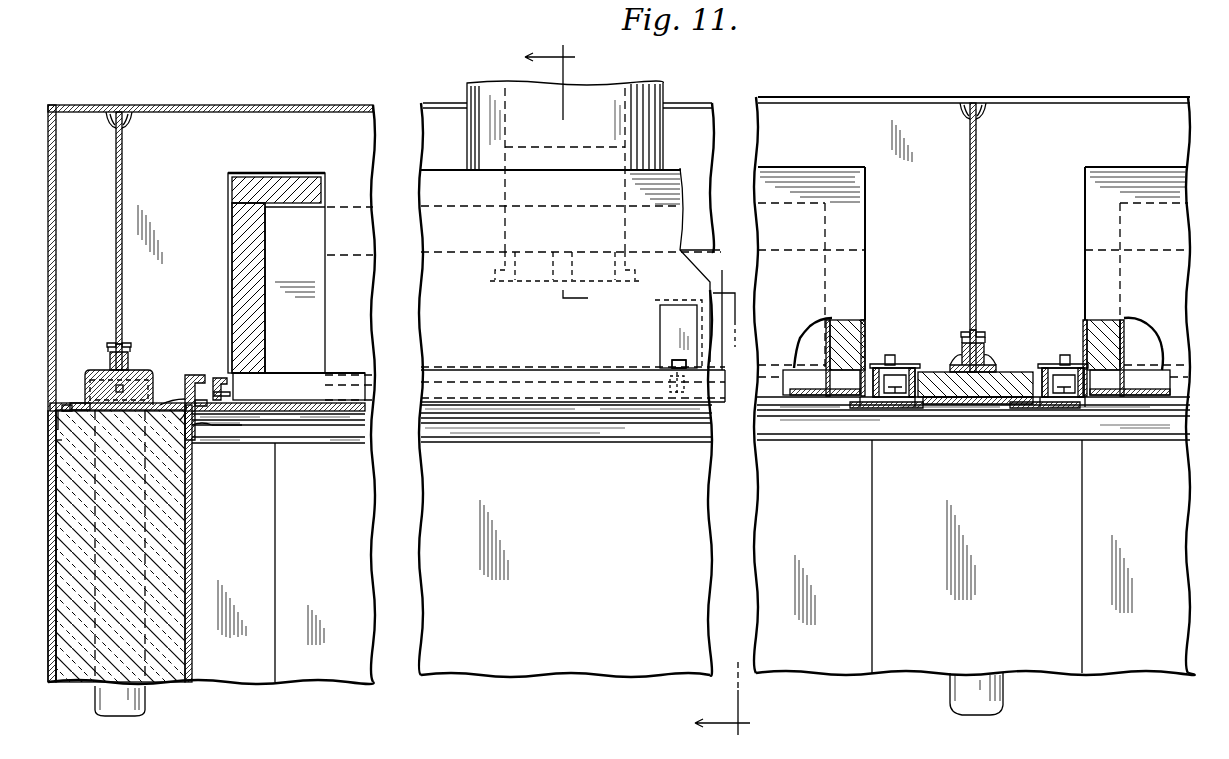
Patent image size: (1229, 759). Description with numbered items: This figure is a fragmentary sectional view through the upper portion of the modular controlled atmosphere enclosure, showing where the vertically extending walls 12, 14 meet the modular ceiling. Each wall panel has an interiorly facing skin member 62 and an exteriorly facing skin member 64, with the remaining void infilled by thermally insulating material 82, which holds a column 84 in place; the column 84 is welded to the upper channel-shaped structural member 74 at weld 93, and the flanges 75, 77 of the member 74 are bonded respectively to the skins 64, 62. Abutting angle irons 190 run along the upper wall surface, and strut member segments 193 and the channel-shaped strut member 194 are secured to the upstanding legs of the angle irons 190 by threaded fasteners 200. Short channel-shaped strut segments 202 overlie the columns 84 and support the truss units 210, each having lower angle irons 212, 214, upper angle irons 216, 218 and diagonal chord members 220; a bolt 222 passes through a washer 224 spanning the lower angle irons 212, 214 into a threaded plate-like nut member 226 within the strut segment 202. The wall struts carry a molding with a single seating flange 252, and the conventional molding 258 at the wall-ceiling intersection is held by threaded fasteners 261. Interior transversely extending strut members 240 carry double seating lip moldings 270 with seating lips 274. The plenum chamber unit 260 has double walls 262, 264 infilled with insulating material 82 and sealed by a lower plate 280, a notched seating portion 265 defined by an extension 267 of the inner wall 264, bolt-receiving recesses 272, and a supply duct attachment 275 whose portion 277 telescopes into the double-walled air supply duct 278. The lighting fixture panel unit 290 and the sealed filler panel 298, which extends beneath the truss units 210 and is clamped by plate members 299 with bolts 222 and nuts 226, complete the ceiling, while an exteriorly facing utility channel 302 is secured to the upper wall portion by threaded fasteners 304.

The wall 12 is at (51, 604).
The wall 14 is at (420, 677).
The interior skin member 62 is at (192, 530).
The exterior skin member 64 is at (52, 537).
The upper channel-shaped structural member 74 is at (106, 394).
The flange 75 is at (56, 417).
The flange 77 is at (192, 437).
The thermally insulating material 82 is at (1010, 368).
The column 84 is at (97, 695).
The weld 93 is at (53, 434).
The angle iron 190 is at (177, 391).
The strut member segment 193 is at (222, 369).
The channel-shaped strut member 194 is at (725, 394).
The threaded fastener 200 is at (192, 367).
The short channel-shaped strut segment 202 is at (90, 395).
The support truss unit 210 is at (139, 96).
The lower angle iron 212 is at (114, 349).
The lower angle iron 214 is at (122, 354).
The upper angle iron 216 is at (112, 114).
The upper angle iron 218 is at (128, 114).
The chord member 220 is at (122, 170).
The bolt 222 is at (128, 330).
The washer 224 is at (109, 333).
The threaded plate-like nut member 226 is at (1111, 377).
The transversely extending strut member 240 is at (907, 408).
The seating flange 252 is at (316, 416).
The molding 258 is at (349, 441).
The plenum chamber unit 260 is at (285, 164).
The threaded fastener 261 is at (227, 432).
The outer wall 262 is at (265, 228).
The inner wall 264 is at (232, 228).
The notched seating portion 265 is at (271, 366).
The extension 267 is at (250, 385).
The double seating lip molding 270 is at (862, 408).
The bolt-receiving recess 272 is at (664, 315).
The seating lip 274 is at (1015, 406).
The supply duct attachment 275 is at (624, 233).
The supply duct portion 277 is at (614, 160).
The air supply duct 278 is at (664, 86).
The lower plate 280 is at (670, 358).
The lighting fixture panel unit 290 is at (776, 237).
The filler panel 298 is at (935, 358).
The plate member 299 is at (910, 355).
The utility channel 302 is at (52, 218).
The threaded fastener 304 is at (65, 403).